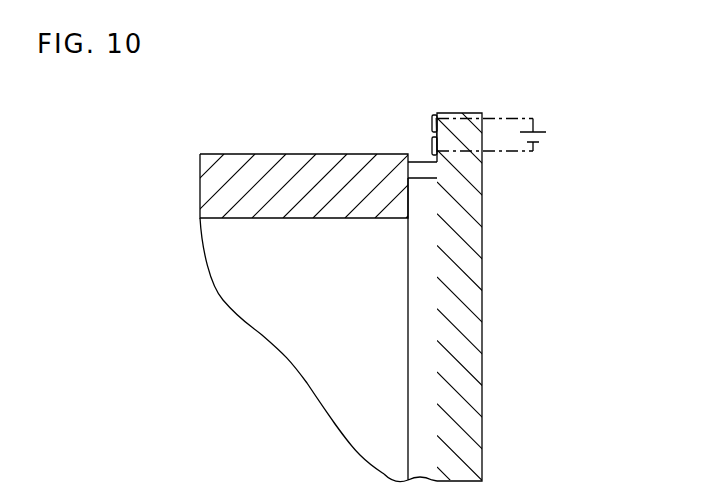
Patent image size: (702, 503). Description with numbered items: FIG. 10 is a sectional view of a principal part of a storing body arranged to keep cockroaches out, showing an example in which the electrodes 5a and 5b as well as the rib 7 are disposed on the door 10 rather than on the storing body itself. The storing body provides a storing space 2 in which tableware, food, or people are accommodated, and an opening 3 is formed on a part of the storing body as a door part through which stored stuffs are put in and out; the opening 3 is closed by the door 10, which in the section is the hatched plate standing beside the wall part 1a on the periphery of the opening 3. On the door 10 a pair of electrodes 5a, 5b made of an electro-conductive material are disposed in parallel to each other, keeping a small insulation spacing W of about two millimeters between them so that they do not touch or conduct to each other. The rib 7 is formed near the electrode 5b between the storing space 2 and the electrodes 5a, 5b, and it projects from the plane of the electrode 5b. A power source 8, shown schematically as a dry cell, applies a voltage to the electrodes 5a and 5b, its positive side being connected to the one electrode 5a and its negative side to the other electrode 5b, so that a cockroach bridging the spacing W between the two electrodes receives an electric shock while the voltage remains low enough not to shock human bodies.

The wall part 1a is at (407, 183).
The storing space 2 is at (345, 353).
The opening 3 is at (397, 468).
The rib 7 is at (421, 172).
The door 10 is at (468, 285).
The electrode 5a is at (437, 115).
The electrode 5b is at (432, 150).
The insulation spacing W is at (432, 128).
The power source 8 is at (541, 137).